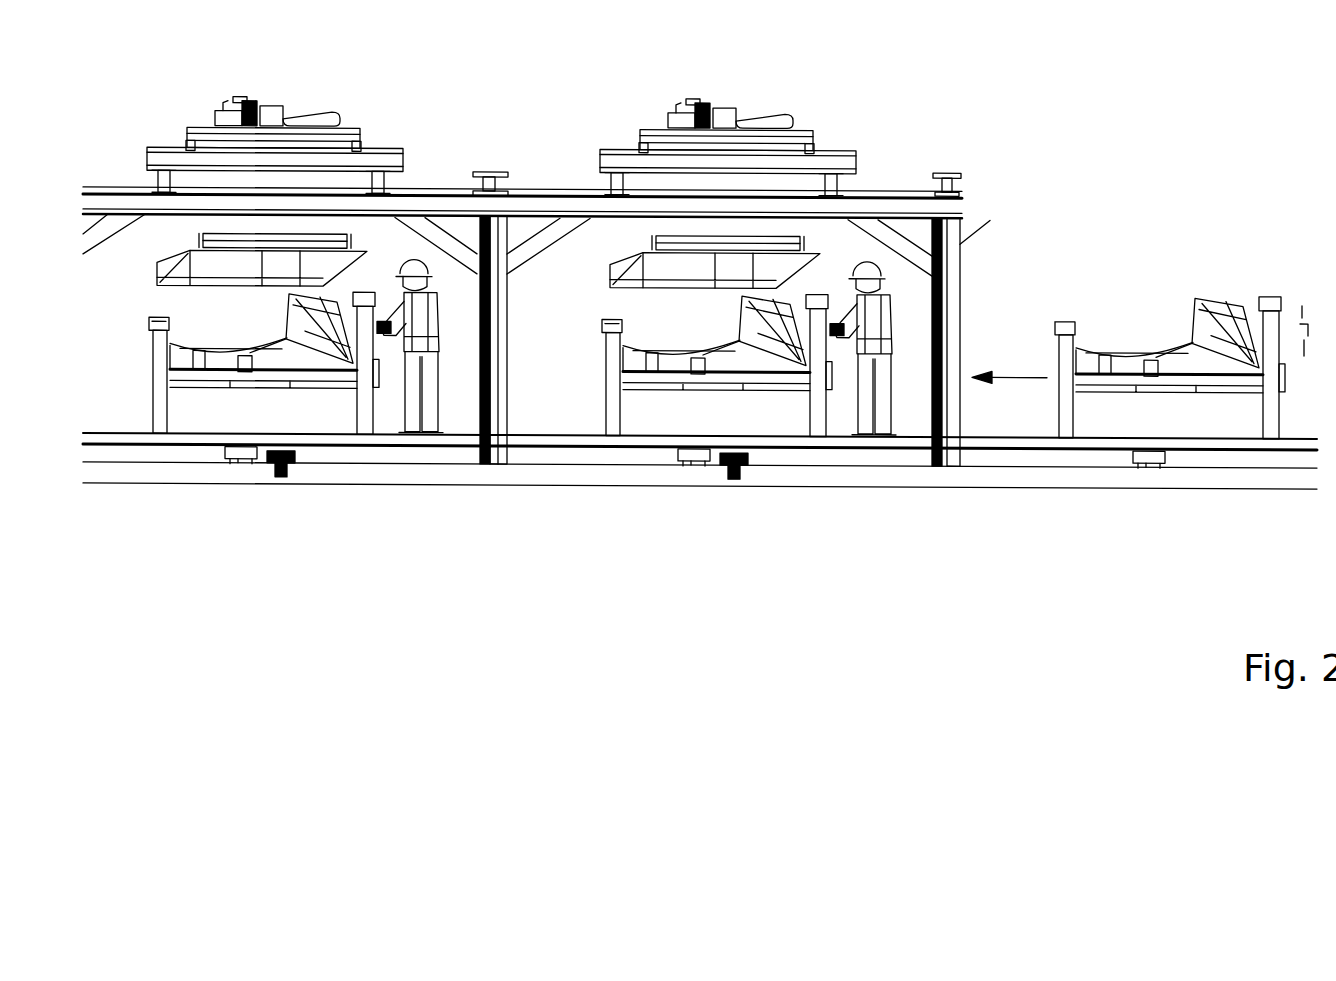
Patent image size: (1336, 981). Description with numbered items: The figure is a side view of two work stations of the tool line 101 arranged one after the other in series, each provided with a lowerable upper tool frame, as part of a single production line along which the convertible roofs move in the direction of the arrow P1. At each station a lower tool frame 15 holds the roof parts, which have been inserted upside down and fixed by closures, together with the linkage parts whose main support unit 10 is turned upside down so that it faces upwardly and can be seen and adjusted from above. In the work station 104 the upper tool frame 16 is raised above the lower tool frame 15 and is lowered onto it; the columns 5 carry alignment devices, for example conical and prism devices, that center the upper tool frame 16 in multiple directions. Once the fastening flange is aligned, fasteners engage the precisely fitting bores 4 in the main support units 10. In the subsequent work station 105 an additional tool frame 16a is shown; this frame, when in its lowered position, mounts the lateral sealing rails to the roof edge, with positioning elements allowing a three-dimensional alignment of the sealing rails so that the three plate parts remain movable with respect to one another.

The tool line 101 is at (945, 140).
The additional tool frame 16a is at (178, 282).
The upper tool frame 16 is at (672, 273).
The main support unit 10 is at (290, 306).
The bore 4 is at (150, 324).
The column 5 is at (167, 410).
The lower tool frame 15 is at (143, 410).
The work station 105 is at (118, 434).
The work station 104 is at (568, 434).
The arrow P1 is at (1012, 372).